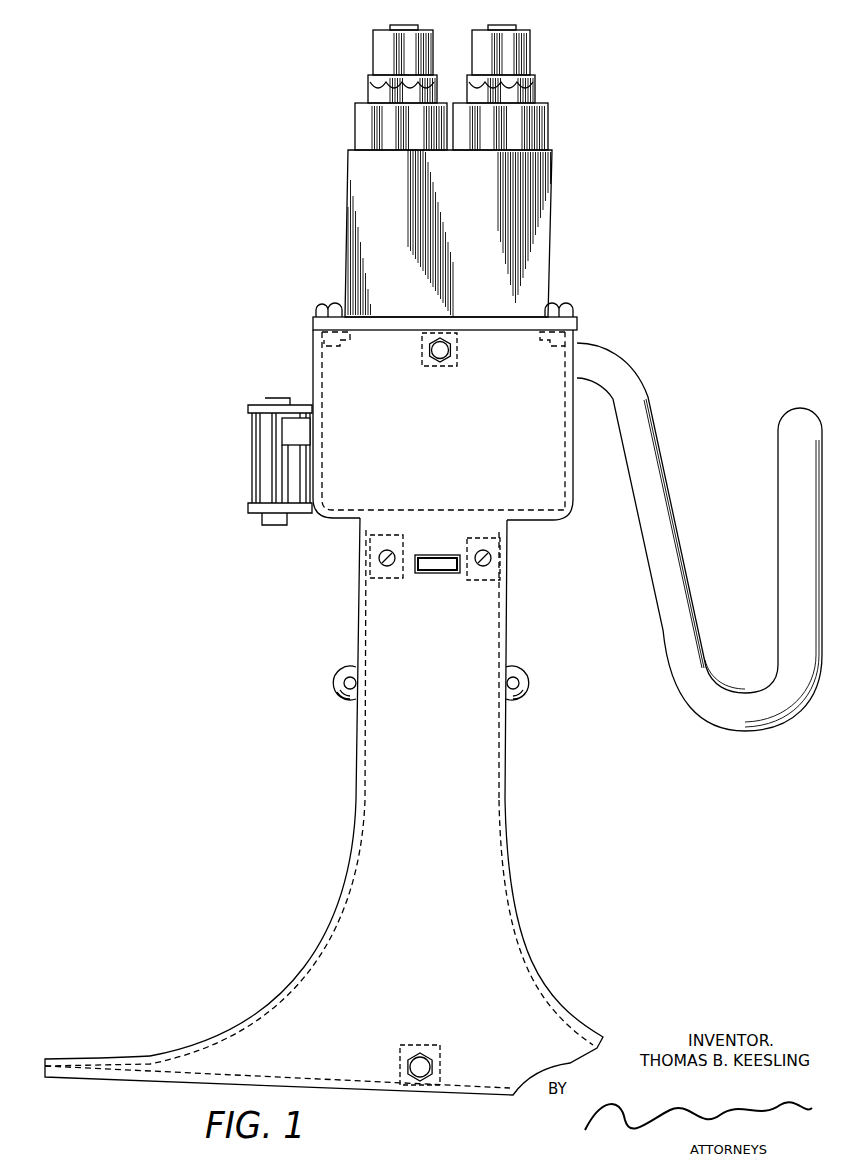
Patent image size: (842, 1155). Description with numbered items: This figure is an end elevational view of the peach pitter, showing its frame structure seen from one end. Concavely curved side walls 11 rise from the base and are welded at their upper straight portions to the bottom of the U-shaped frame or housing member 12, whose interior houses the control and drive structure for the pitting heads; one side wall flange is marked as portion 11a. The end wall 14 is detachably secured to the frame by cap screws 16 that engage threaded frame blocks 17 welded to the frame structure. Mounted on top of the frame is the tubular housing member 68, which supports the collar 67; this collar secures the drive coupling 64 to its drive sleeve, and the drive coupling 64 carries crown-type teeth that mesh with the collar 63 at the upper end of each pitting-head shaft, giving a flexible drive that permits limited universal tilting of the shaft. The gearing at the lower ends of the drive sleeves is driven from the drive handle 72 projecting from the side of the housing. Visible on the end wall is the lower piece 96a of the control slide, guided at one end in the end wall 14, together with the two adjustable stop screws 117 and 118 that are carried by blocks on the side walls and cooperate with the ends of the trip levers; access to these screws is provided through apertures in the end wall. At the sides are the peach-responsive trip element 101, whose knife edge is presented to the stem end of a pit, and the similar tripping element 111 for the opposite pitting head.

The collar 63 is at (531, 62).
The drive coupling 64 is at (536, 96).
The collar 67 is at (356, 128).
The tubular housing member 68 is at (550, 248).
The housing member 12 is at (573, 485).
The frame block 17 is at (463, 360).
The drive handle 72 is at (680, 505).
The end wall 14 is at (434, 763).
The side wall 11 is at (508, 862).
The base flange 11a is at (352, 857).
The cap screw 16 is at (434, 1060).
The adjustable stop screw 117 is at (379, 558).
The adjustable stop screw 118 is at (491, 558).
The lower piece of control slide 96a is at (430, 545).
The trip element 101 is at (352, 690).
The tripping element 111 is at (520, 690).